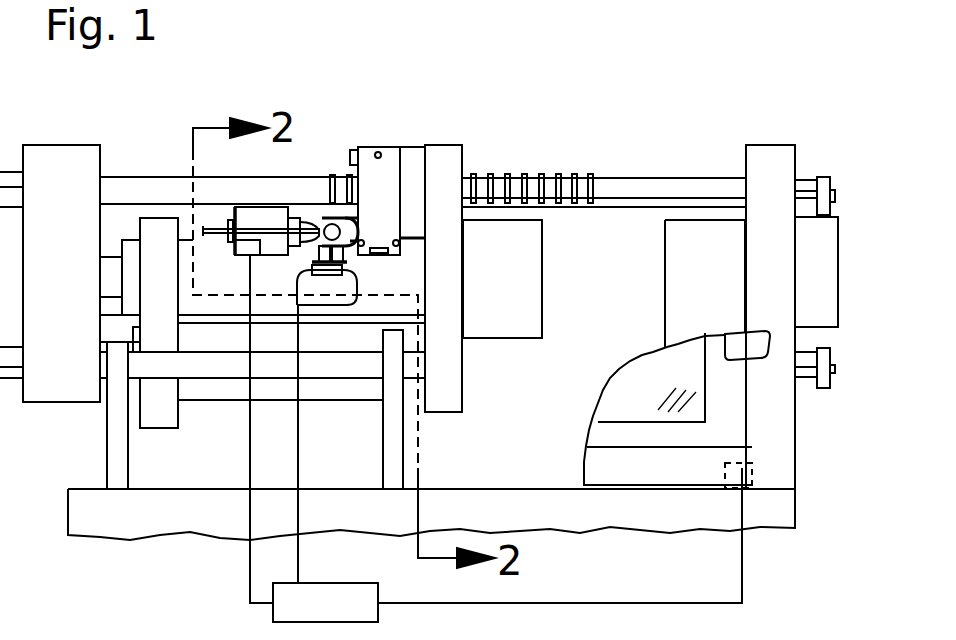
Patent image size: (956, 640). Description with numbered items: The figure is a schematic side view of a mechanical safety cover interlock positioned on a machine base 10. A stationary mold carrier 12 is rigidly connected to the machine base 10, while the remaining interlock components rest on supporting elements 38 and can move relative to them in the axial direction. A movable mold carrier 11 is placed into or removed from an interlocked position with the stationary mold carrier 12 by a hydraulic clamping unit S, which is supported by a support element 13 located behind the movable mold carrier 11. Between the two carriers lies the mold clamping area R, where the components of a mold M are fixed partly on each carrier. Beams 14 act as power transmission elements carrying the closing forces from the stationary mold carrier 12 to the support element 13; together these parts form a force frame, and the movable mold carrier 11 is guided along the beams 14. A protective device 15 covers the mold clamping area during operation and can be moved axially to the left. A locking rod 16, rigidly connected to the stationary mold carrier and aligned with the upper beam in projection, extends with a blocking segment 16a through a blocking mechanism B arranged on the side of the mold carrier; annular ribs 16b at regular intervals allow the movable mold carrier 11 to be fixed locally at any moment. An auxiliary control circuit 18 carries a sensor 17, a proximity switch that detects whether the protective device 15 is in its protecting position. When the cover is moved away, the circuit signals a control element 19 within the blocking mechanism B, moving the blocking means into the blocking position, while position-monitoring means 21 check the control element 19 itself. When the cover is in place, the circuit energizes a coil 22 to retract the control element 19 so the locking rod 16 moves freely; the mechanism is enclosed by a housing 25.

The machine base 10 is at (332, 515).
The movable mold carrier 11 is at (448, 162).
The stationary mold carrier 12 is at (762, 180).
The support element 13 is at (52, 160).
The beams 14 is at (302, 192).
The protective device 15 is at (625, 462).
The locking rod 16 is at (608, 190).
The blocking segment 16a is at (513, 190).
The annular ribs 16b is at (588, 205).
The sensor 17 is at (786, 472).
The auxiliary control circuit 18 is at (335, 619).
The control element 19 is at (215, 242).
The position-monitoring means 21 is at (353, 275).
The coil 22 is at (257, 215).
The housing 25 is at (390, 170).
The supporting elements 38 is at (122, 452).
The blocking mechanism B is at (370, 135).
The mold M is at (527, 282).
The mold clamping area R is at (632, 237).
The hydraulic clamping unit S is at (190, 247).